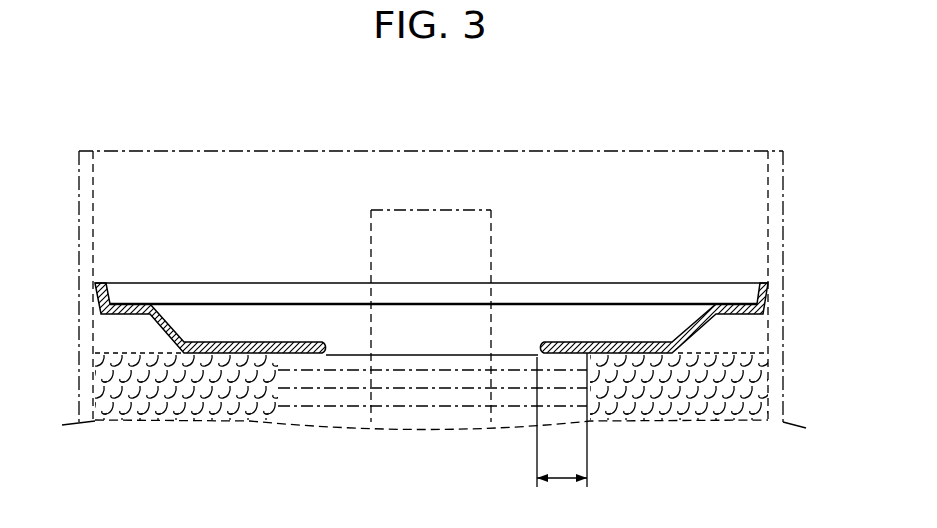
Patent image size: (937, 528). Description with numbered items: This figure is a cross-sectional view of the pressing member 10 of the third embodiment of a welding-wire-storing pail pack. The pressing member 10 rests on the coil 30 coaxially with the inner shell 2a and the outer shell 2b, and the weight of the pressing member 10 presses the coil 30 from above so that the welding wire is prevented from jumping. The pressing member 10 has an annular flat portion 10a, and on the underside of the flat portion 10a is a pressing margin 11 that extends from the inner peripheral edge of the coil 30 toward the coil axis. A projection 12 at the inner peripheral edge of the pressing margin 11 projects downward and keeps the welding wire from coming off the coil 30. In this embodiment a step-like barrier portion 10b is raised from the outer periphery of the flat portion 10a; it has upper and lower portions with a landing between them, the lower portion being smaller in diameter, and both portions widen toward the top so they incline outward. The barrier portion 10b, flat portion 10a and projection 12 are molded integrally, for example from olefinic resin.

The inner shell 2a is at (455, 225).
The outer shell 2b is at (776, 206).
The pressing member 10 is at (395, 298).
The flat portion 10a is at (287, 342).
The barrier portion 10b is at (157, 322).
The pressing margin 11 is at (562, 420).
The projection 12 is at (544, 352).
The coil 30 is at (196, 397).